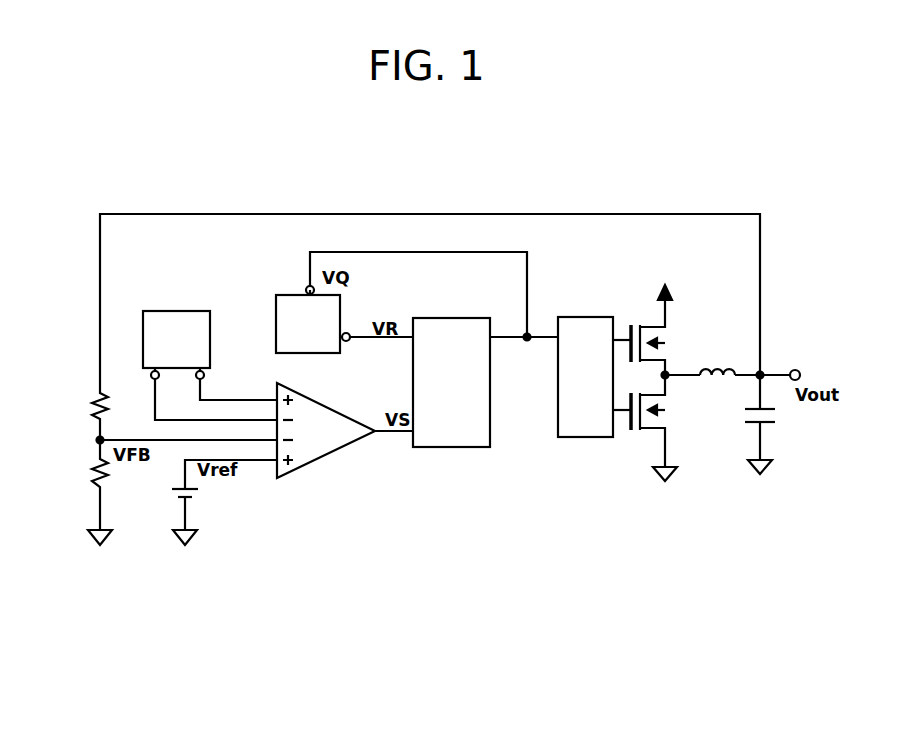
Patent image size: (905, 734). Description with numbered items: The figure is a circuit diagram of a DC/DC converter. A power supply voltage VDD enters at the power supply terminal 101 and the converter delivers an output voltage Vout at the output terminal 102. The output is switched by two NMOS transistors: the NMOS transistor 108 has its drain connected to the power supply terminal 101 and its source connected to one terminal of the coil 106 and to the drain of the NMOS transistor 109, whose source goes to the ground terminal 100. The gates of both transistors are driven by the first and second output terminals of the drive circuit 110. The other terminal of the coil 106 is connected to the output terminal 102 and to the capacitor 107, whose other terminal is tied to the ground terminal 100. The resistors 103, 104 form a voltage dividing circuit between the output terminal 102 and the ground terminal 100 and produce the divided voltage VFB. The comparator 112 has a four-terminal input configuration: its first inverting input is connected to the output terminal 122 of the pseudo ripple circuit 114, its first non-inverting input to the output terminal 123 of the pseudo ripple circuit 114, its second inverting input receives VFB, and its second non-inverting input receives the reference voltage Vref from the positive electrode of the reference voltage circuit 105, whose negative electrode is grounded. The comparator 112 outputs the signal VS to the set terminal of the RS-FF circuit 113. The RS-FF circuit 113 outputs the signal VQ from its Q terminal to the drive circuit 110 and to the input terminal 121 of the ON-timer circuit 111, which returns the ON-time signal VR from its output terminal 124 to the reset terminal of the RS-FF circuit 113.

The ground terminal 100 is at (100, 549).
The power supply terminal 101 is at (660, 290).
The output terminal 102 is at (792, 368).
The resistor 103 is at (92, 409).
The resistor 104 is at (92, 475).
The reference voltage circuit 105 is at (200, 497).
The coil 106 is at (718, 381).
The capacitor 107 is at (770, 418).
The NMOS transistor 108 is at (638, 320).
The NMOS transistor 109 is at (640, 435).
The drive circuit 110 is at (578, 438).
The ON-timer circuit 111 is at (345, 304).
The comparator 112 is at (335, 450).
The RS-FF circuit 113 is at (447, 448).
The pseudo ripple circuit 114 is at (174, 310).
The input terminal of the ON-timer circuit 121 is at (305, 285).
The output terminal of the pseudo ripple circuit 122 is at (150, 377).
The output terminal of the pseudo ripple circuit 123 is at (205, 378).
The output terminal of the ON-timer circuit 124 is at (352, 333).